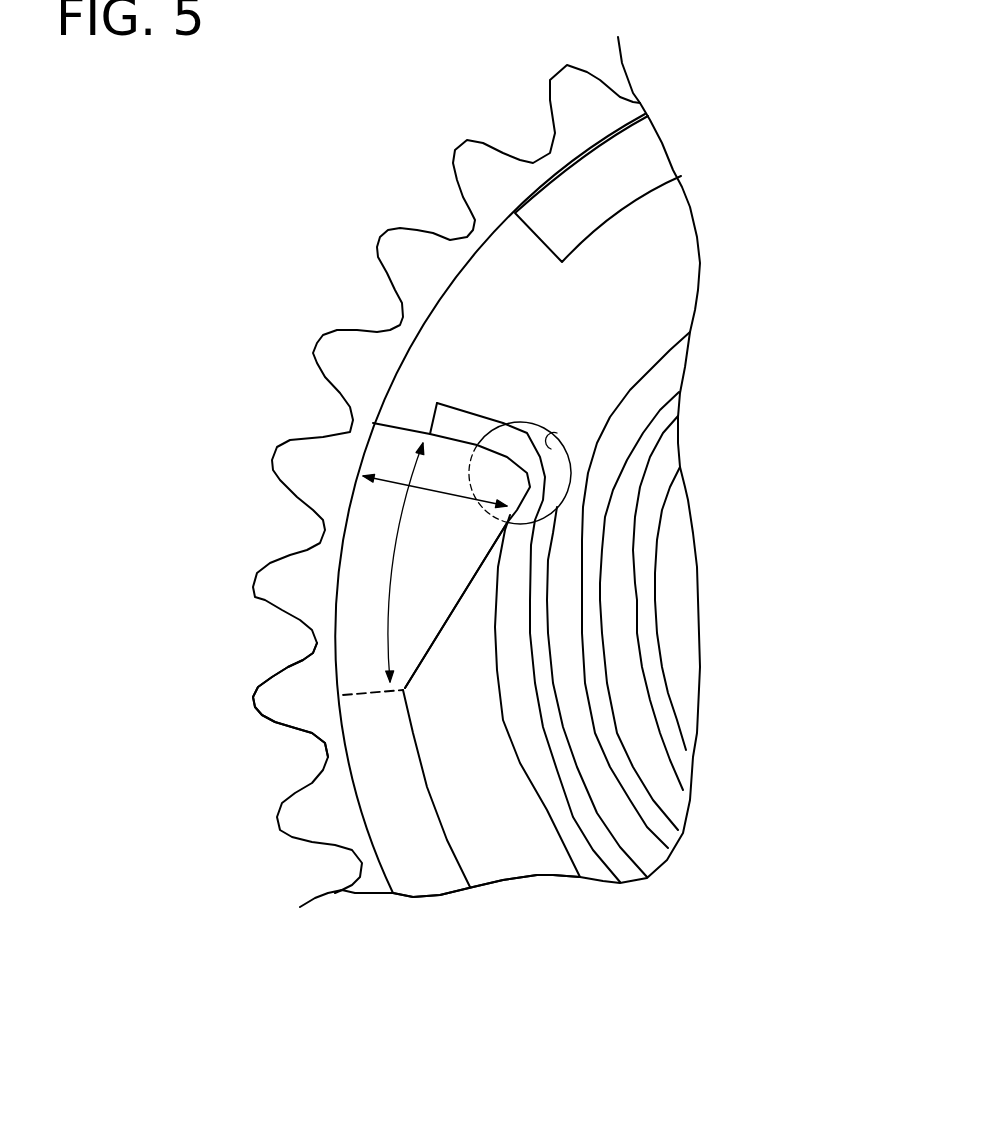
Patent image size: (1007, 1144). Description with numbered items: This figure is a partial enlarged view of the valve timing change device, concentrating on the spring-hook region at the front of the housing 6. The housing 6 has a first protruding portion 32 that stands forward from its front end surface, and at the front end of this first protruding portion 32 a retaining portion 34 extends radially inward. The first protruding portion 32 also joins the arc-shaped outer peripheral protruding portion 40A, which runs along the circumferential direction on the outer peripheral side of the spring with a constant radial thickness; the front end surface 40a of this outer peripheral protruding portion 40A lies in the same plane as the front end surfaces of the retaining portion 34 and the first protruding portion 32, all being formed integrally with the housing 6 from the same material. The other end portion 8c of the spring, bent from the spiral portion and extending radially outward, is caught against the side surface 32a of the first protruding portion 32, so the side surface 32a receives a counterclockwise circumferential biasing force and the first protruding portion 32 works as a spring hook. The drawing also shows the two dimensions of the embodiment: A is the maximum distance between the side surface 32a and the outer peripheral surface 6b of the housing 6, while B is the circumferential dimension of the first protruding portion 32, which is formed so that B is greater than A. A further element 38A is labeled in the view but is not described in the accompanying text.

The housing 6 is at (449, 479).
The outer peripheral surface of the housing 6b is at (259, 684).
The other end portion of the spring 8c is at (459, 558).
The retaining portion 34 is at (358, 559).
The first protruding portion 32 is at (366, 709).
The side surface of the first protruding portion 32a is at (624, 483).
The pin 38A is at (631, 473).
The outer peripheral protruding portion 40A is at (482, 744).
The front end surface of the outer peripheral protruding portion 40a is at (486, 896).
The maximum distance between side surface and outer peripheral surface A is at (359, 490).
The circumferential dimension of the first protruding portion B is at (318, 562).